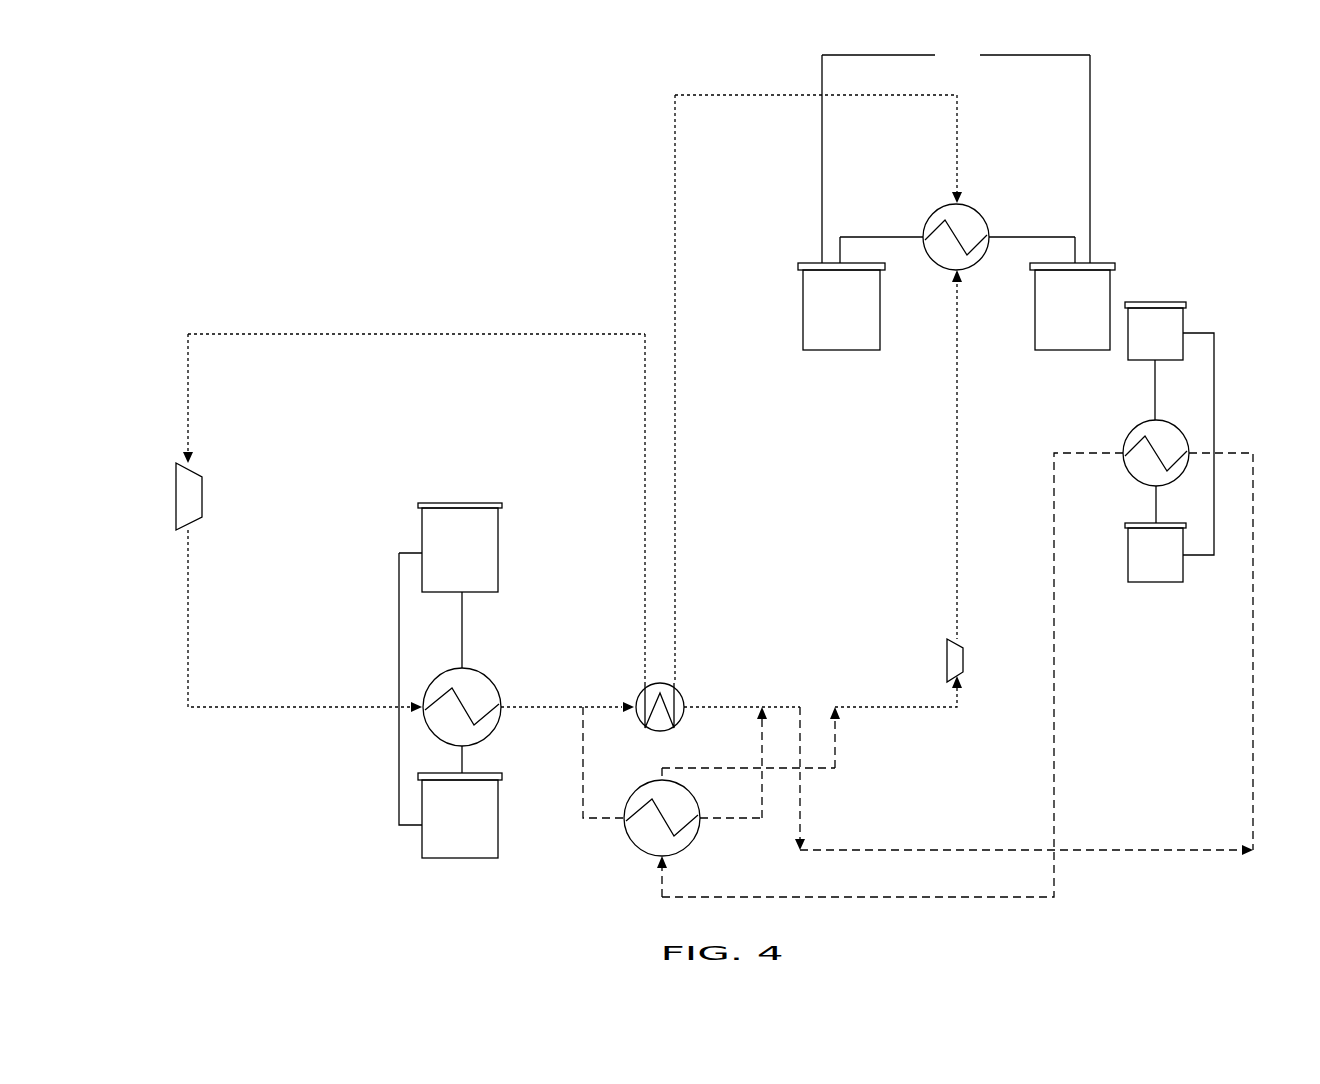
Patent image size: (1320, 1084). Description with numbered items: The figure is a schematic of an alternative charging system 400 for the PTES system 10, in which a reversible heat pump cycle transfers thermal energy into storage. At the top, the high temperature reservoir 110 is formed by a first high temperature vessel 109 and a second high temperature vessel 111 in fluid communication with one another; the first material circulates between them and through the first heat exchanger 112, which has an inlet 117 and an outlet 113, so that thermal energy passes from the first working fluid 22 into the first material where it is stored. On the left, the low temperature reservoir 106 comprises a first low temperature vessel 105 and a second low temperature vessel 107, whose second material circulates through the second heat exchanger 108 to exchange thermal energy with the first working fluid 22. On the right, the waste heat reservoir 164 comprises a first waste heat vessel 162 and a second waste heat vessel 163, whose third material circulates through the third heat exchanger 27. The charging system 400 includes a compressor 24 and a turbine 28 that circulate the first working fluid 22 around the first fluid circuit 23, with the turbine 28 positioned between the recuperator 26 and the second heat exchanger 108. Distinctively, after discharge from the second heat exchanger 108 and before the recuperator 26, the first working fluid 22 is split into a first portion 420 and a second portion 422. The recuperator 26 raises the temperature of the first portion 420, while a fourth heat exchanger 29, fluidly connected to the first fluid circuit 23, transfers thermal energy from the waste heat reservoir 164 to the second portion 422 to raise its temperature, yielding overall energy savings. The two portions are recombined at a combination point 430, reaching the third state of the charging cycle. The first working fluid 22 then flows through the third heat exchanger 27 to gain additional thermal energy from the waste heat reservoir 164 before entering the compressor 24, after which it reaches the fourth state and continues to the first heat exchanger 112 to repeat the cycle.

The PTES system 10 is at (374, 105).
The charging system 400 is at (737, 85).
The high temperature reservoir 110 is at (956, 153).
The first heat exchanger 112 is at (922, 237).
The inlet 117 is at (962, 205).
The outlet 113 is at (948, 272).
The first high temperature vessel 109 is at (838, 350).
The second high temperature vessel 111 is at (1070, 350).
The first waste heat vessel 162 is at (1185, 318).
The waste heat reservoir 164 is at (1215, 398).
The third heat exchanger 27 is at (1125, 445).
The second waste heat vessel 163 is at (1155, 582).
The turbine 28 is at (176, 500).
The first low temperature vessel 105 is at (500, 508).
The second heat exchanger 108 is at (490, 675).
The low temperature reservoir 106 is at (399, 787).
The second low temperature vessel 107 is at (500, 780).
The first portion 420 is at (620, 705).
The recuperator 26 is at (677, 728).
The second portion 422 is at (583, 770).
The fourth heat exchanger 29 is at (630, 835).
The combination point 430 is at (765, 705).
The first working fluid 22 is at (845, 708).
The first fluid circuit 23 is at (940, 708).
The compressor 24 is at (963, 660).